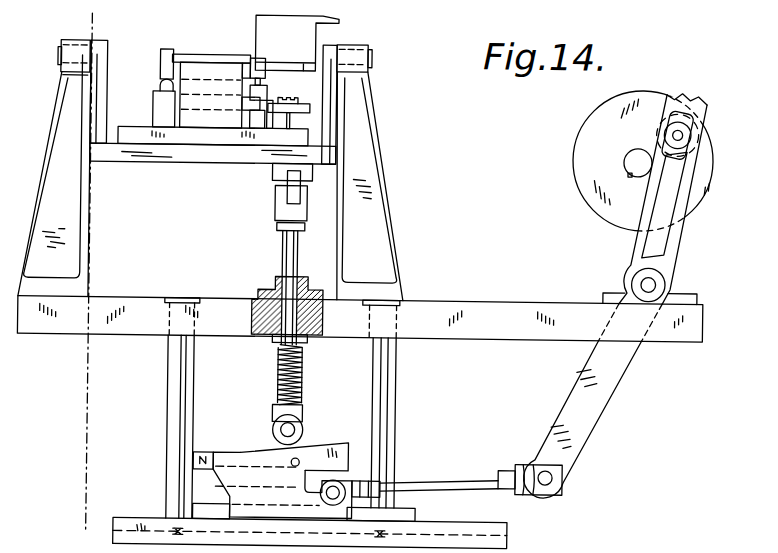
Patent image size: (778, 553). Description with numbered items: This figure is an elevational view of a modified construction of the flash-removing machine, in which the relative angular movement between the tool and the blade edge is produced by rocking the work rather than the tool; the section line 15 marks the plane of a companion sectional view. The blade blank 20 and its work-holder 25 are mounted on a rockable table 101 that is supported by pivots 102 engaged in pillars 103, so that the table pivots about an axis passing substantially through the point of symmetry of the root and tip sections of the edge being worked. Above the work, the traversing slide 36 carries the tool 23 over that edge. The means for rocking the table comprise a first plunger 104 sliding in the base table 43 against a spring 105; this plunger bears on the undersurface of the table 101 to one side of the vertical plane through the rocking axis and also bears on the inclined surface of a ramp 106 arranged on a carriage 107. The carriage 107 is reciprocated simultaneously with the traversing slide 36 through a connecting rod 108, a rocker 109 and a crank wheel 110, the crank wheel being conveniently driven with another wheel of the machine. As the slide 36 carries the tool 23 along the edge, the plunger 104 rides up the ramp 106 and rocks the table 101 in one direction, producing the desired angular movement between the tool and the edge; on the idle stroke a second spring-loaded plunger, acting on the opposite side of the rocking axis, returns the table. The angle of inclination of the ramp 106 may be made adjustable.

The section line 15- 15 is at (114, 29).
The blade blank 20 is at (186, 60).
The tool 23 is at (260, 63).
The work-holder 25 is at (201, 118).
The traversing slide 36 is at (284, 39).
The base table 43 is at (497, 300).
The rockable table 101 is at (220, 165).
The pivots 102 is at (57, 60).
The pillars 103 is at (59, 208).
The first plunger 104 is at (282, 250).
The spring 105 is at (277, 367).
The ramp 106 is at (279, 452).
The carriage 107 is at (308, 468).
The connecting rod 108 is at (443, 479).
The rocker 109 is at (604, 402).
The crank wheel 110 is at (586, 144).